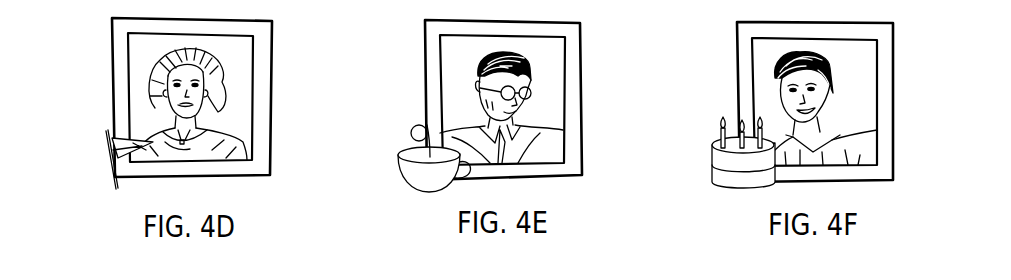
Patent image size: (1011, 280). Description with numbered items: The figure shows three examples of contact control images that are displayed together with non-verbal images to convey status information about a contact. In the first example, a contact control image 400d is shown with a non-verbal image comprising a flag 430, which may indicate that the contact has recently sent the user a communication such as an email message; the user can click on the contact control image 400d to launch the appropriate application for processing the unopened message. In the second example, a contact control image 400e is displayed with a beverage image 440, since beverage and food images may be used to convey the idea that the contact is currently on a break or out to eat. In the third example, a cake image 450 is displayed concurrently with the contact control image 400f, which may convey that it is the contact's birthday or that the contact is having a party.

In FIG. 4D, the contact control image 400d is at (284, 58).
In FIG. 4D, the flag 430 is at (111, 160).
In FIG. 4E, the contact control image 400e is at (596, 60).
In FIG. 4E, the beverage image 440 is at (398, 157).
In FIG. 4F, the contact control image 400f is at (909, 62).
In FIG. 4F, the cake image 450 is at (712, 150).